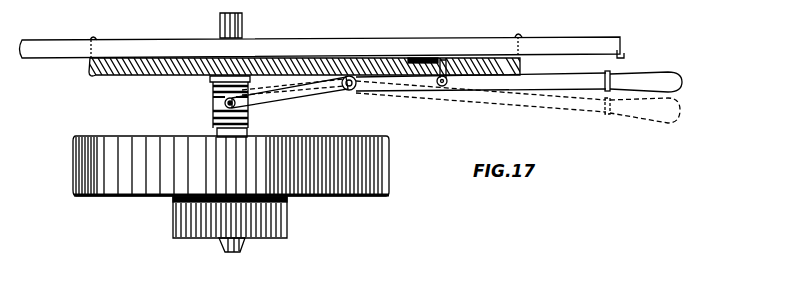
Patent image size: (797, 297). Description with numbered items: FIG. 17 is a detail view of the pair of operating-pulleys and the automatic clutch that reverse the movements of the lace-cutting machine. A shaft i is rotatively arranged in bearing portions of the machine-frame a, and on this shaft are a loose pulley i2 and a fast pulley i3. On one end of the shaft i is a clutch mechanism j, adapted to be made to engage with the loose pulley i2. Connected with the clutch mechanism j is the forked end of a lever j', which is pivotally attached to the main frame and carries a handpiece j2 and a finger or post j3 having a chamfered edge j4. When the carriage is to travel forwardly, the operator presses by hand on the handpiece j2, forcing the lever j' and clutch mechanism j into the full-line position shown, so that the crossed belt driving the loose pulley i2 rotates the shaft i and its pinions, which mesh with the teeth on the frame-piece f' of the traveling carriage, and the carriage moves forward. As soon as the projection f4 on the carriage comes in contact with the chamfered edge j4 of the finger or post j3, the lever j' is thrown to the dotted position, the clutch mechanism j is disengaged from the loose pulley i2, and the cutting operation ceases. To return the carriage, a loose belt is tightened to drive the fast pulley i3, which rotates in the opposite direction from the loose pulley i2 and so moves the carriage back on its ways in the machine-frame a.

The machine-frame a is at (142, 68).
The frame-piece f' is at (320, 34).
The projection f4 is at (627, 58).
The shaft i is at (245, 28).
The loose pulley i2 is at (367, 172).
The fast pulley i3 is at (280, 238).
The clutch mechanism j is at (214, 106).
The lever j' is at (294, 101).
The handpiece j2 is at (676, 76).
The finger or post j3 is at (440, 87).
The chamfered edge j4 is at (442, 70).